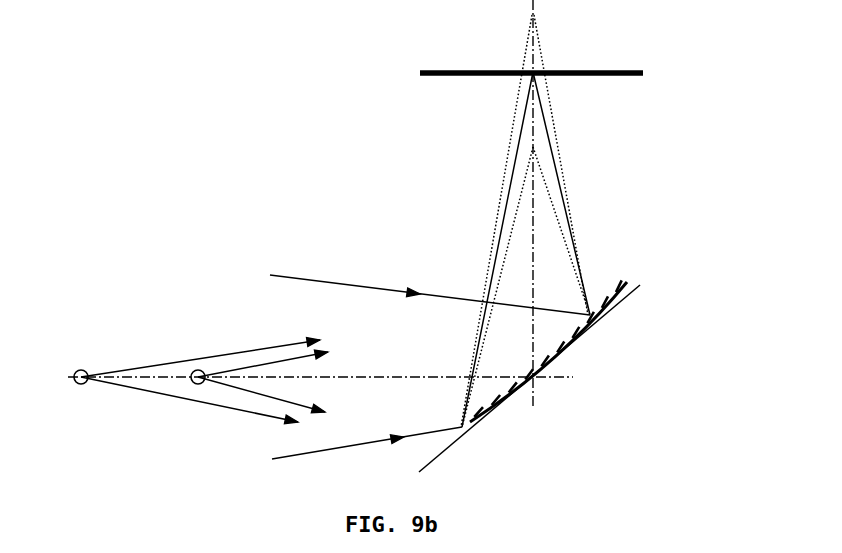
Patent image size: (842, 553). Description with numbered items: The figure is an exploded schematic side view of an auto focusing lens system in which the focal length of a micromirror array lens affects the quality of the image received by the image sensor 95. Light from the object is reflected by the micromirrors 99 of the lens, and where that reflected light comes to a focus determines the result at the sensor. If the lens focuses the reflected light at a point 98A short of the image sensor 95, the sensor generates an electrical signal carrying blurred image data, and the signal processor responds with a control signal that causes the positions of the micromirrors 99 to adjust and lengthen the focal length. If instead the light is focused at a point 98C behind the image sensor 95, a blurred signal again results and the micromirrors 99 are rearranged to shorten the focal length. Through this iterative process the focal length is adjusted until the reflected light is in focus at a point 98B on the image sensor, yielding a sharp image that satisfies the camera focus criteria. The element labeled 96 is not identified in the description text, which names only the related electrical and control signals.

The image sensor 95 is at (613, 75).
The mirror 96 is at (567, 348).
The micromirrors 99 is at (630, 275).
The in-focus point short of the image sensor 98A is at (533, 147).
The in-focus point on the image sensor 98B is at (533, 72).
The in-focus point behind the image sensor 98C is at (533, 15).